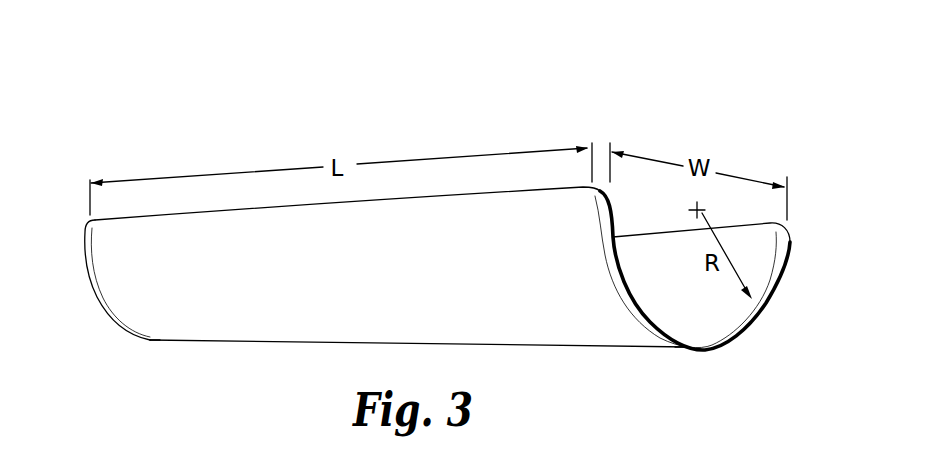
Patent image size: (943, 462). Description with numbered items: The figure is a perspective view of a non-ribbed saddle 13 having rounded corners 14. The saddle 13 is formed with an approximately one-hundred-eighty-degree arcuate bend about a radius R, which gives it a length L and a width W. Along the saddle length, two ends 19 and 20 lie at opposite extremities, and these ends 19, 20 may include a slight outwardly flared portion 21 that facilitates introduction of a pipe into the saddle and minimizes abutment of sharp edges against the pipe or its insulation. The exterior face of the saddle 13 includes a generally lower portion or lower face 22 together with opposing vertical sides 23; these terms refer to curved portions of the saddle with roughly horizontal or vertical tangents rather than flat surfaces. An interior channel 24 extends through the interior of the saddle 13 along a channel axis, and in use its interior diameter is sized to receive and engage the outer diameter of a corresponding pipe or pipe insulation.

The saddle 13 is at (444, 220).
The rounded corners 14 is at (85, 228).
The end 19 is at (698, 323).
The end 20 is at (108, 278).
The outwardly flared portion 21 is at (140, 343).
The lower face 22 is at (230, 347).
The vertical sides 23 is at (385, 268).
The interior channel 24 is at (740, 253).